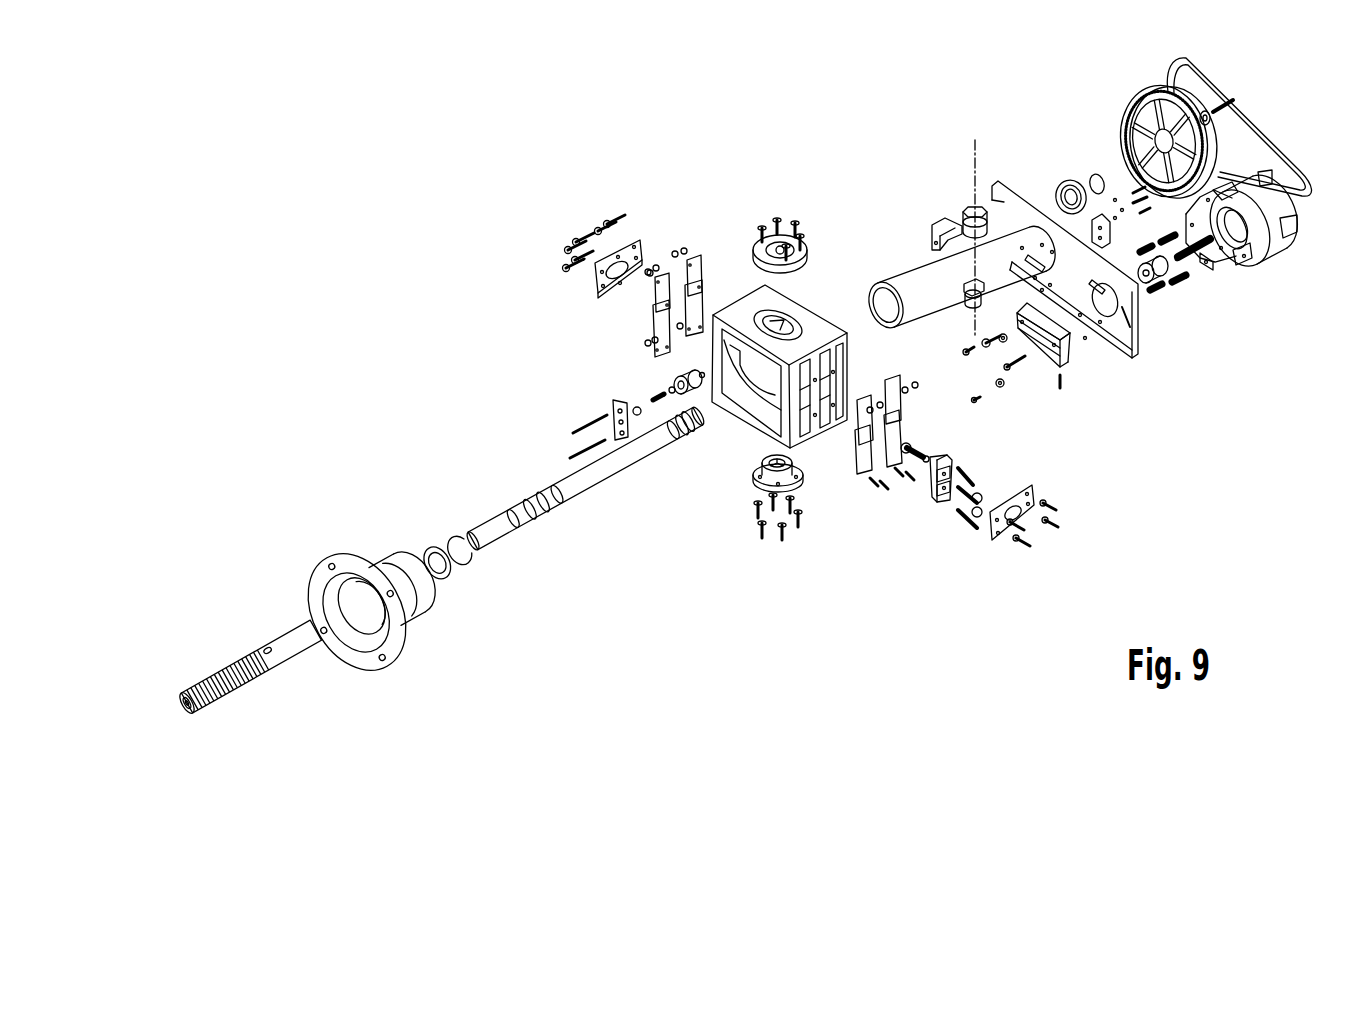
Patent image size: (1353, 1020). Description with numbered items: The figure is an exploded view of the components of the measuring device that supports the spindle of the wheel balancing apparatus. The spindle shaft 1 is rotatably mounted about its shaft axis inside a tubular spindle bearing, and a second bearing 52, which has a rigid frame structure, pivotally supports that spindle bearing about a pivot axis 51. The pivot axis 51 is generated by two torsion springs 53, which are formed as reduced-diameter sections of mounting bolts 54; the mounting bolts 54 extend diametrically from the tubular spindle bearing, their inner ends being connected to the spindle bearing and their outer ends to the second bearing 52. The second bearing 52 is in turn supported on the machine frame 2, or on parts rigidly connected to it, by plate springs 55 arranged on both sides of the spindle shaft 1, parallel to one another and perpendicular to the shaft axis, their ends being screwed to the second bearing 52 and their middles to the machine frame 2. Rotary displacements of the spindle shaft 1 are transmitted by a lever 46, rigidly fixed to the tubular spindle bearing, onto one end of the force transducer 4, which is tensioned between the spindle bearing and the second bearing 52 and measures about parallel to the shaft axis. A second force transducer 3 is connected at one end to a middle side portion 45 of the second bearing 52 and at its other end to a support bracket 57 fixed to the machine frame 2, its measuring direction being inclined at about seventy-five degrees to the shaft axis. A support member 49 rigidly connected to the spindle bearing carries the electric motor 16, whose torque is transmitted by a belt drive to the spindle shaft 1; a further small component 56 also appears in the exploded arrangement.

The spindle shaft 1 is at (583, 484).
The machine frame 2 is at (642, 268).
The force transducer 3 is at (918, 443).
The force transducer 4 is at (652, 400).
The electric motor 16 is at (1266, 233).
The middle side portion 45 is at (823, 387).
The lever 46 is at (932, 248).
The support member 49 is at (1127, 338).
The pivot axis 51 is at (972, 142).
The second bearing 52 is at (813, 325).
The torsion springs 53 is at (967, 207).
The mounting bolts 54 is at (950, 220).
The plate springs 55 is at (695, 268).
The holding plate 56 is at (613, 407).
The support bracket 57 is at (933, 493).